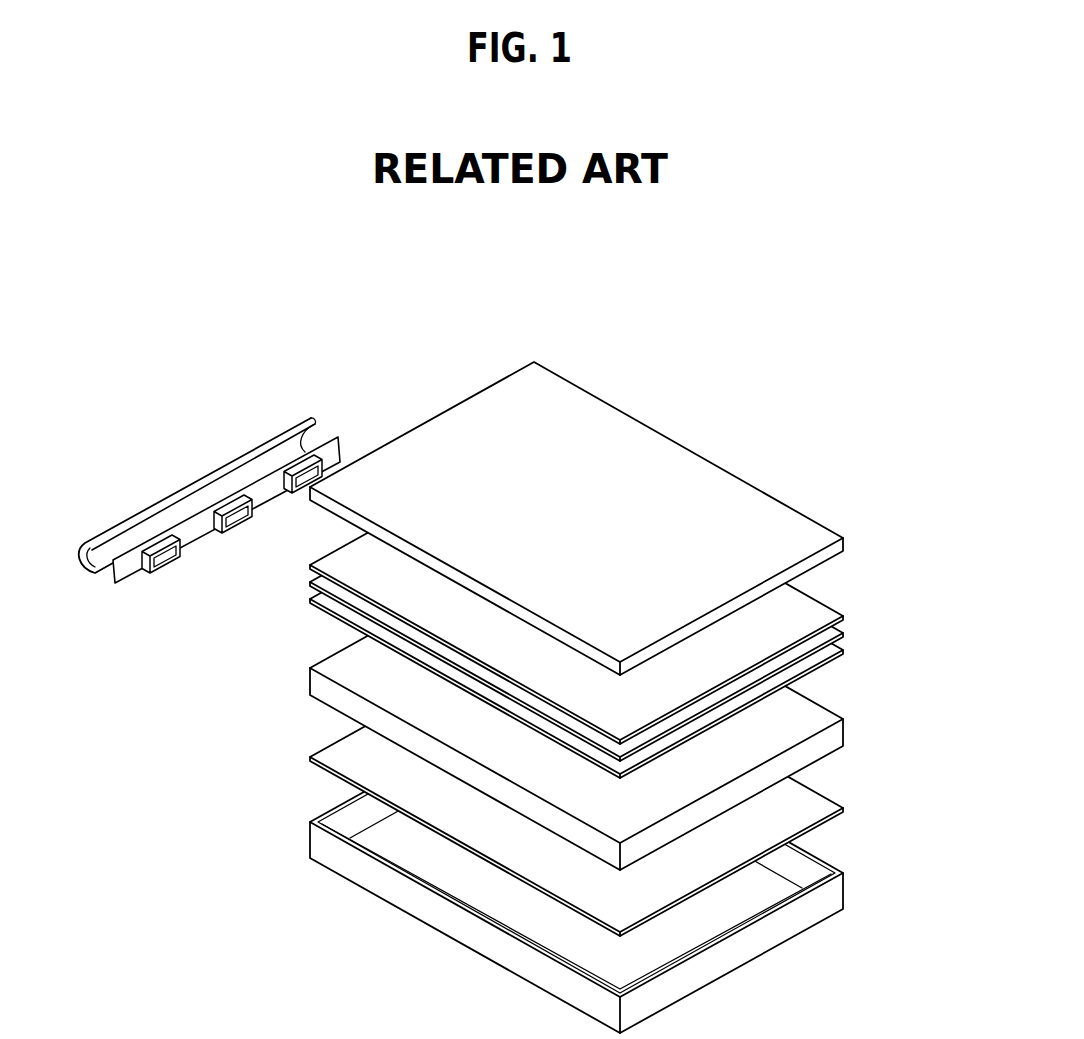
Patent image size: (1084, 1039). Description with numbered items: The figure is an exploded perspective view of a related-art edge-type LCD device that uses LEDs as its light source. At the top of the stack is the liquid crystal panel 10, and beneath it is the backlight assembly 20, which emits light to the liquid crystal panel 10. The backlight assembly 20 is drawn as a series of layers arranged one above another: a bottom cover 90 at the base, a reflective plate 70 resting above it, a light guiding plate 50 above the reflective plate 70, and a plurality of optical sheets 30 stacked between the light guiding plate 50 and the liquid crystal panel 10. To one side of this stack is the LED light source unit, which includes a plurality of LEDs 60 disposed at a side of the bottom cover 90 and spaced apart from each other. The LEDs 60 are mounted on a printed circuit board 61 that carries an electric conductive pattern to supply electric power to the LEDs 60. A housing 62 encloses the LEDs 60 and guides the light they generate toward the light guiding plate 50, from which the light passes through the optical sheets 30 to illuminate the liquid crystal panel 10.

The liquid crystal panel 10 is at (845, 538).
The backlight assembly 20 is at (625, 736).
The optical sheets 30 is at (600, 609).
The light guiding plate 50 is at (845, 727).
The LEDs 60 is at (305, 464).
The printed circuit board 61 is at (337, 435).
The housing 62 is at (218, 468).
The reflective plate 70 is at (845, 808).
The bottom cover 90 is at (845, 885).